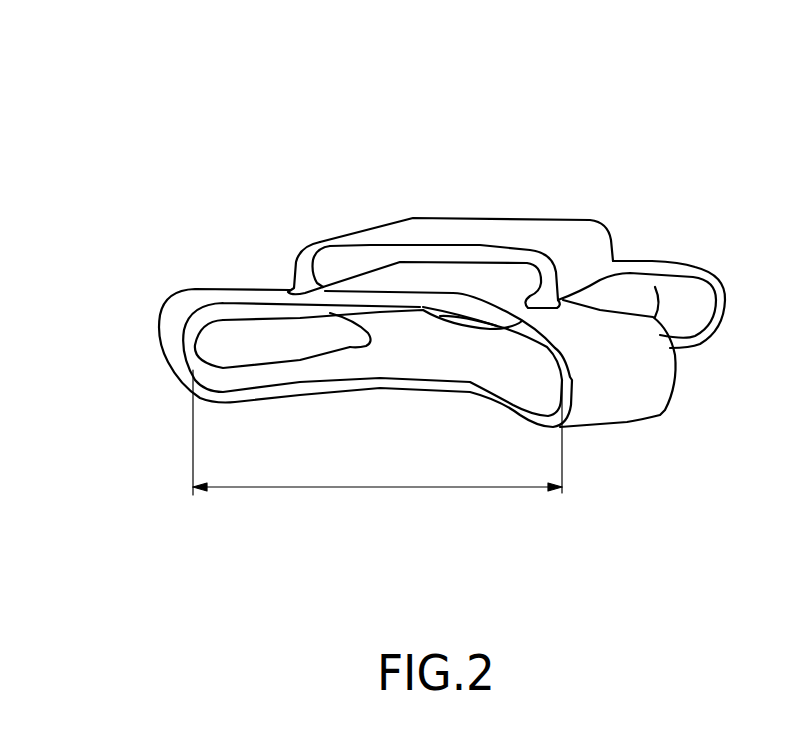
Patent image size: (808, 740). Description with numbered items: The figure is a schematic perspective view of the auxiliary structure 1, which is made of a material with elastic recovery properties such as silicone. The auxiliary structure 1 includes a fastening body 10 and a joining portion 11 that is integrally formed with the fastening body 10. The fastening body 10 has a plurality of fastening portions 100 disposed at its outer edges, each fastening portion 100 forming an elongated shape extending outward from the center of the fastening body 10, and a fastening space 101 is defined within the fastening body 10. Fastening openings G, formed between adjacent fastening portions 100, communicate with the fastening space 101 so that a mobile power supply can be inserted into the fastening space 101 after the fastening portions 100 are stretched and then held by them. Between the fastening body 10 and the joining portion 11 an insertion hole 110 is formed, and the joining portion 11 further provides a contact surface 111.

The auxiliary structure 1 is at (383, 28).
The fastening body 10 is at (702, 252).
The joining portion 11 is at (483, 253).
The insertion hole 110 is at (340, 265).
The contact surface 111 is at (432, 230).
The fastening portion 100 is at (635, 393).
The fastening space 101 is at (416, 357).